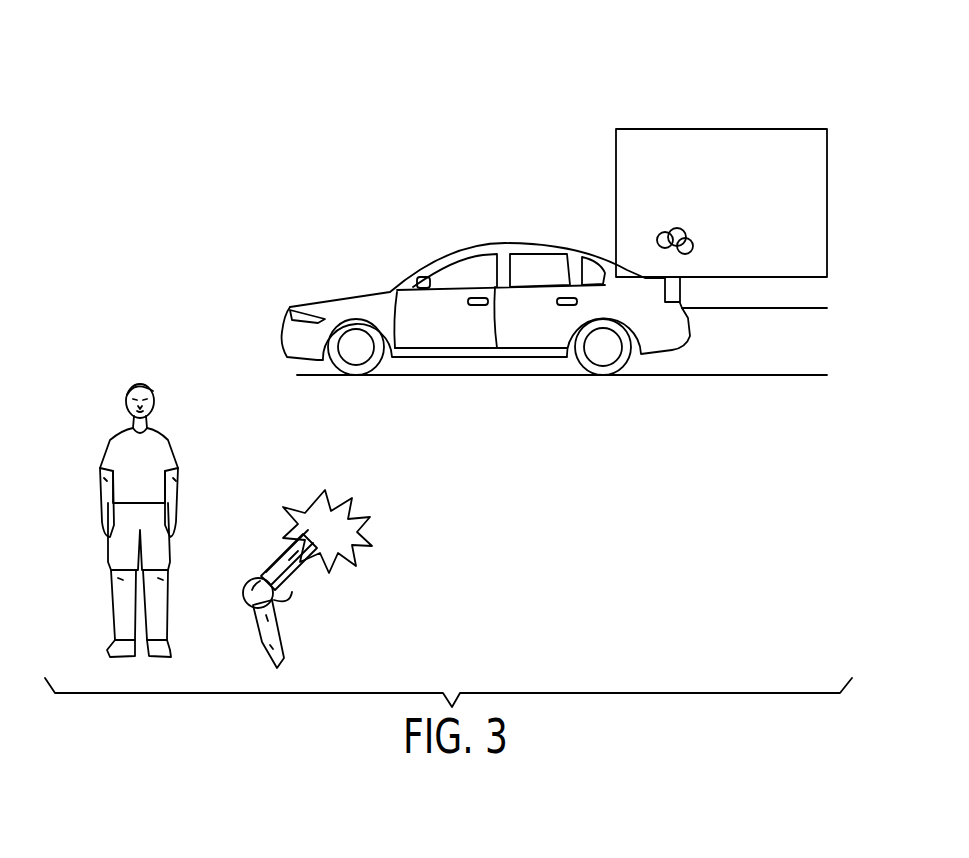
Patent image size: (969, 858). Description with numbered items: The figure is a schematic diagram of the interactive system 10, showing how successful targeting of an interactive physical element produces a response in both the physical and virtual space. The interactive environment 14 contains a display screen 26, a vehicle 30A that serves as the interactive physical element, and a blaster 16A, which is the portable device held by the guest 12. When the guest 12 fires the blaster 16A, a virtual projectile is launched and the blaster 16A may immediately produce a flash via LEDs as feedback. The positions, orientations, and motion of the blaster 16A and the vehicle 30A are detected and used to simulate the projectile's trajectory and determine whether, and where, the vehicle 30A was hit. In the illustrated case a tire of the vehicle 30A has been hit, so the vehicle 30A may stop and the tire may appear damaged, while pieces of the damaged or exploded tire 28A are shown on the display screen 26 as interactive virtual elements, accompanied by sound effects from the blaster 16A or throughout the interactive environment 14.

The interactive system 10 is at (400, 117).
The interactive environment 14 is at (328, 175).
The guest 12 is at (152, 390).
The blaster 16A is at (243, 587).
The vehicle 30A is at (412, 267).
The display screen 26 is at (722, 128).
The pieces of the damaged/exploded tire 28A is at (687, 233).